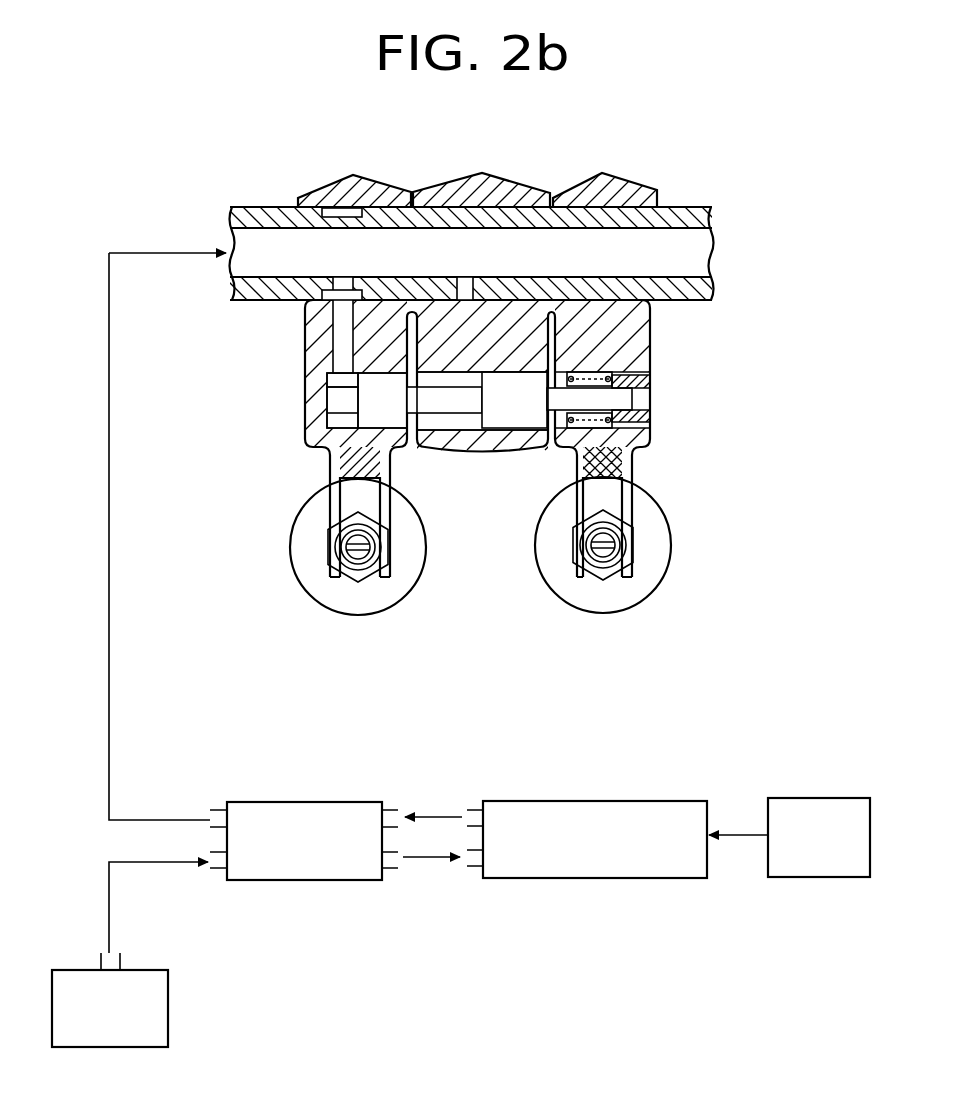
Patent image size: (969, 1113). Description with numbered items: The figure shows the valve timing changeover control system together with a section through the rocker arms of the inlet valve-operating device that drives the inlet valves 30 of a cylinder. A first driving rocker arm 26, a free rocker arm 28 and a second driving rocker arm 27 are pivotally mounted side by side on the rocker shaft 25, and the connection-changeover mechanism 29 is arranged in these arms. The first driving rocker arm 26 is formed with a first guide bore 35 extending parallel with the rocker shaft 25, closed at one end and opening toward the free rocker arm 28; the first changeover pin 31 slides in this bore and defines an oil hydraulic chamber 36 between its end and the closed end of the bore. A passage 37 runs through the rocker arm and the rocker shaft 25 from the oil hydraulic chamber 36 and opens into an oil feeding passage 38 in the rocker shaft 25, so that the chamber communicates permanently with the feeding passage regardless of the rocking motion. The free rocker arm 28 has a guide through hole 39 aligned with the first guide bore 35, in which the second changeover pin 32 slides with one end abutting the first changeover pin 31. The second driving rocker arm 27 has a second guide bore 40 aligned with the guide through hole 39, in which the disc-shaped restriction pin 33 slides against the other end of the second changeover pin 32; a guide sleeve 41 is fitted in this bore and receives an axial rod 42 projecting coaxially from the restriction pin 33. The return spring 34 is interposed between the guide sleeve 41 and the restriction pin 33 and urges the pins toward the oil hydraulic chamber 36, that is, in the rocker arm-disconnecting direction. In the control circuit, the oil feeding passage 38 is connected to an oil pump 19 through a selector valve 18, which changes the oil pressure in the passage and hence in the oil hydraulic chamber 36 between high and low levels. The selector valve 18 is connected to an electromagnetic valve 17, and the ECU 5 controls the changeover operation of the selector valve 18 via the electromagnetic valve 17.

The ECU 5 is at (810, 798).
The electromagnetic valve 17 is at (612, 801).
The selector valve 18 is at (305, 802).
The oil pump 19 is at (135, 970).
The rocker shaft 25 is at (253, 220).
The first driving rocker arm 26 is at (328, 195).
The second driving rocker arm 27 is at (623, 190).
The free rocker arm 28 is at (458, 192).
The connection-changeover mechanism 29 is at (500, 442).
The inlet valve 30 is at (297, 498).
The first changeover pin 31 is at (385, 420).
The second changeover pin 32 is at (527, 420).
The restriction pin 33 is at (557, 398).
The return spring 34 is at (623, 456).
The first guide bore 35 is at (358, 376).
The oil hydraulic chamber 36 is at (335, 425).
The passage 37 is at (342, 330).
The oil feeding passage 38 is at (265, 258).
The guide through hole 39 is at (458, 432).
The second guide bore 40 is at (617, 462).
The guide sleeve 41 is at (627, 410).
The axial rod 42 is at (617, 397).